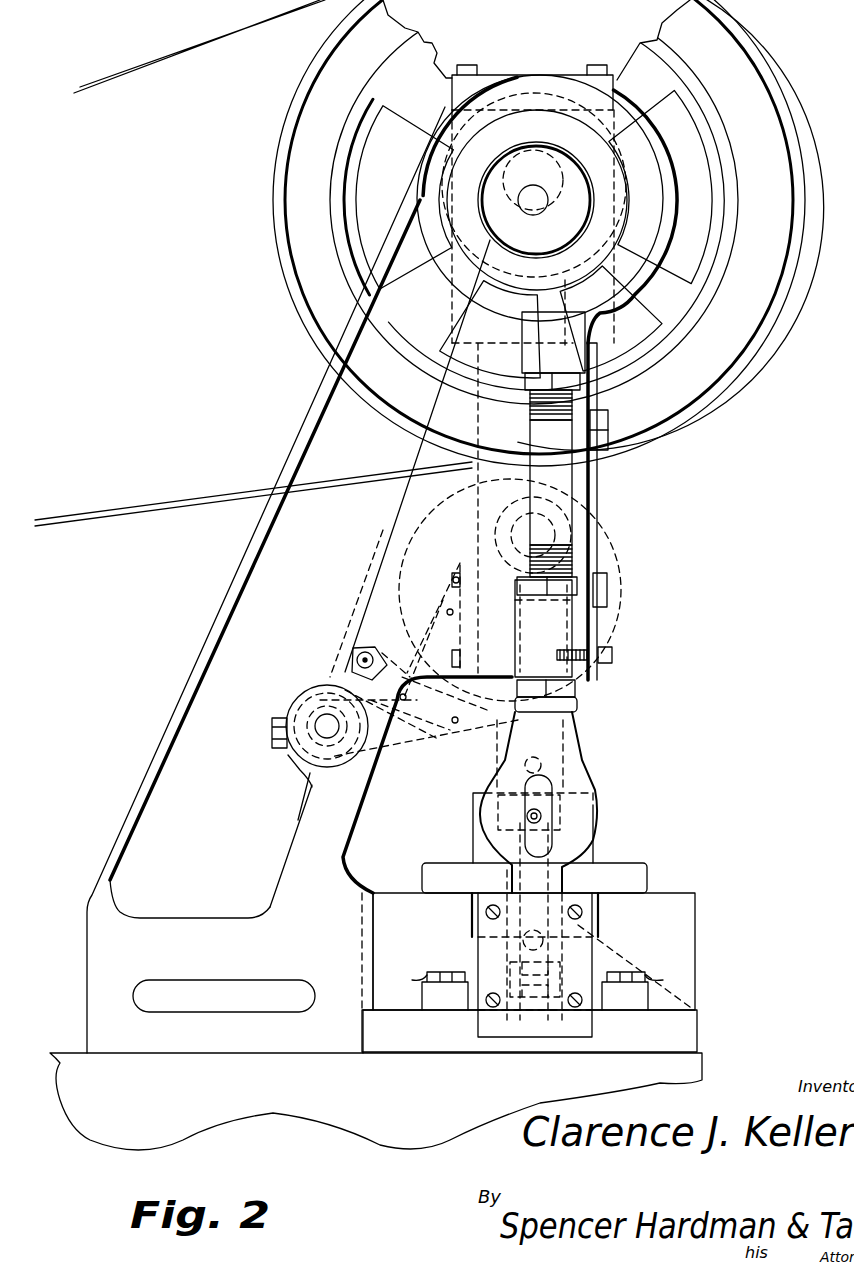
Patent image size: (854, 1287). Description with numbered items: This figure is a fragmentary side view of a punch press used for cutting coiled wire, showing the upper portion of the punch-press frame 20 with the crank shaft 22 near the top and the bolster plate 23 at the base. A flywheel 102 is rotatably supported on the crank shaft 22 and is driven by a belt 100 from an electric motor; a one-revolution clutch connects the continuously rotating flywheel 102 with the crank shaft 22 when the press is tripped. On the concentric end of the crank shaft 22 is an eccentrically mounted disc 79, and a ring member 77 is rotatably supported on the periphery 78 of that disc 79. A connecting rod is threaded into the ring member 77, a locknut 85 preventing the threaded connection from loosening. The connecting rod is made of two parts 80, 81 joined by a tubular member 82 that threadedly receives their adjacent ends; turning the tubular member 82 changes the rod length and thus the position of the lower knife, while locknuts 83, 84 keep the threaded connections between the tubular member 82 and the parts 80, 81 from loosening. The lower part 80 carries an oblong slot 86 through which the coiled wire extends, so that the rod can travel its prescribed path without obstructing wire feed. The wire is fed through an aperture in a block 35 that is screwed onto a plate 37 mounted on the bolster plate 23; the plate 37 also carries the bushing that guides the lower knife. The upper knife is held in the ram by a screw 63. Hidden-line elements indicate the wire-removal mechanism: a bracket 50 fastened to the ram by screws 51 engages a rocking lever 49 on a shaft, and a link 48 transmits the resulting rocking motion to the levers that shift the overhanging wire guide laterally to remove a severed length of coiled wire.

The punch-press frame 20 is at (310, 405).
The crank shaft 22 is at (530, 203).
The bolster plate 23 is at (678, 913).
The block 35 is at (483, 847).
The plate 37 is at (630, 875).
The link 48 is at (455, 720).
The rocking lever 49 is at (403, 697).
The bracket 50 is at (448, 610).
The screws 51 is at (450, 575).
The screw 63 is at (612, 657).
The ring member 77 is at (650, 248).
The periphery 78 is at (655, 187).
The disc 79 is at (633, 168).
The part 80 is at (540, 735).
The part 81 is at (548, 475).
The tubular member 82 is at (560, 627).
The locknut 83 is at (557, 690).
The locknut 84 is at (563, 582).
The locknut 85 is at (573, 385).
The oblong slot 86 is at (545, 790).
The belt 100 is at (160, 62).
The flywheel 102 is at (300, 240).